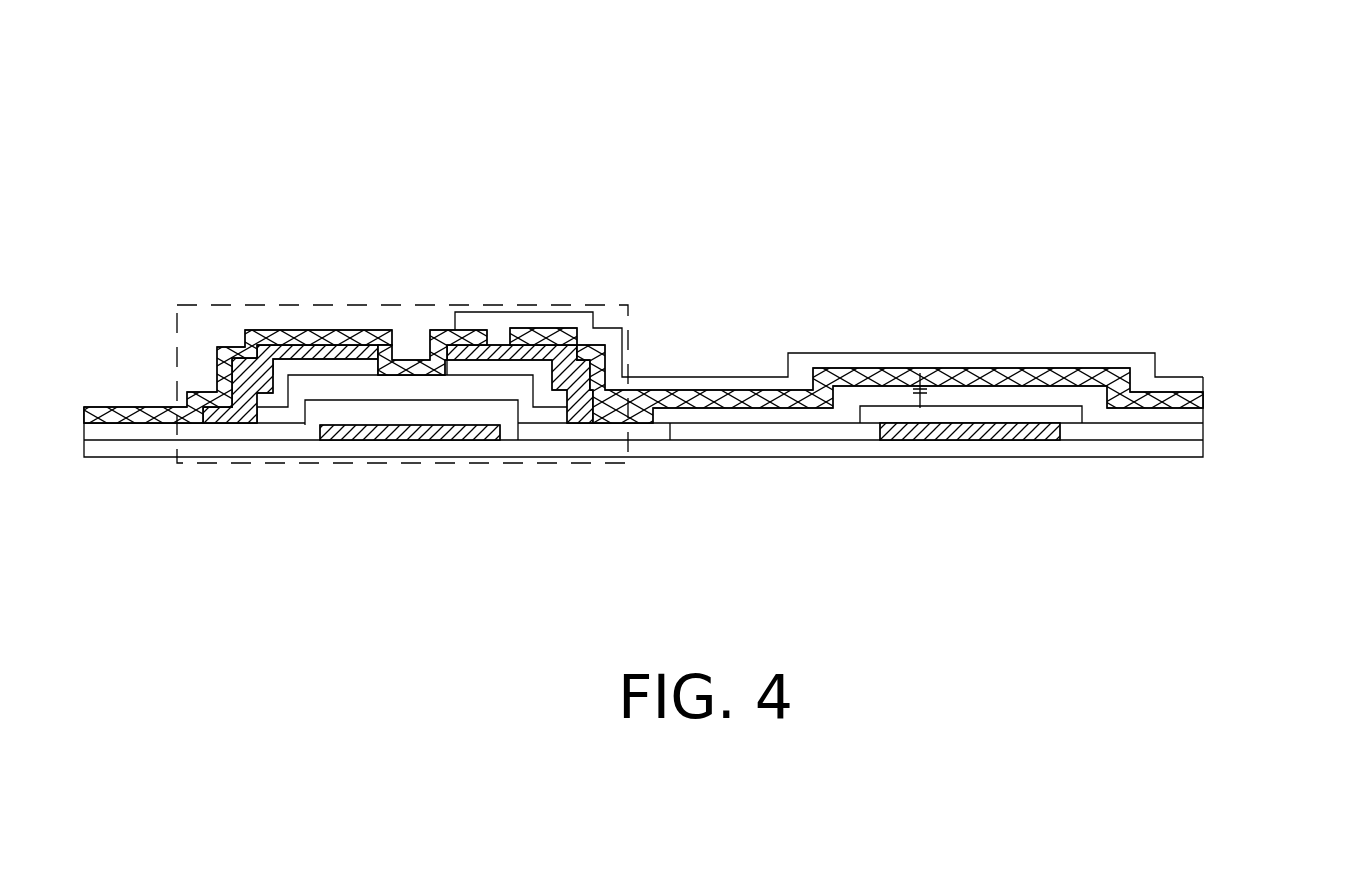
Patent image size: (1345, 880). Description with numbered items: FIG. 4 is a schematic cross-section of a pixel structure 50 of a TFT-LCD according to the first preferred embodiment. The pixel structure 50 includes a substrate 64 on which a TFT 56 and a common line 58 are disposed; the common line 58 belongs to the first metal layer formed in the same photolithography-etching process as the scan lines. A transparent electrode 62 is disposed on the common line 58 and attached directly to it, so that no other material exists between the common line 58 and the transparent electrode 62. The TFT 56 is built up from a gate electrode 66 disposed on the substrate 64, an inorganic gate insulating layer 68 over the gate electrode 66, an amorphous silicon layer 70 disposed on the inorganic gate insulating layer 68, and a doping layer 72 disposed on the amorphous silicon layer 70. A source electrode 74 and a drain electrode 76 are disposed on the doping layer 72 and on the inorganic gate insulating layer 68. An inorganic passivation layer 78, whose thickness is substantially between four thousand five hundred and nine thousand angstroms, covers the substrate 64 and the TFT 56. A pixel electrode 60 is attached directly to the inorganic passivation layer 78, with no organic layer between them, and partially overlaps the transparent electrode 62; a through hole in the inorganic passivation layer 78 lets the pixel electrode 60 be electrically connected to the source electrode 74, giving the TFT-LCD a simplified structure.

The pixel structure 50 is at (1063, 153).
The TFT 56 is at (235, 305).
The common line 58 is at (975, 435).
The pixel electrode 60 is at (1120, 356).
The transparent electrode 62 is at (1200, 430).
The substrate 64 is at (690, 425).
The gate electrode 66 is at (388, 432).
The inorganic gate insulating layer 68 is at (518, 428).
The amorphous silicon layer 70 is at (552, 420).
The doping layer 72 is at (350, 370).
The source electrode 74 is at (547, 340).
The drain electrode 76 is at (220, 350).
The inorganic passivation layer 78 is at (343, 335).